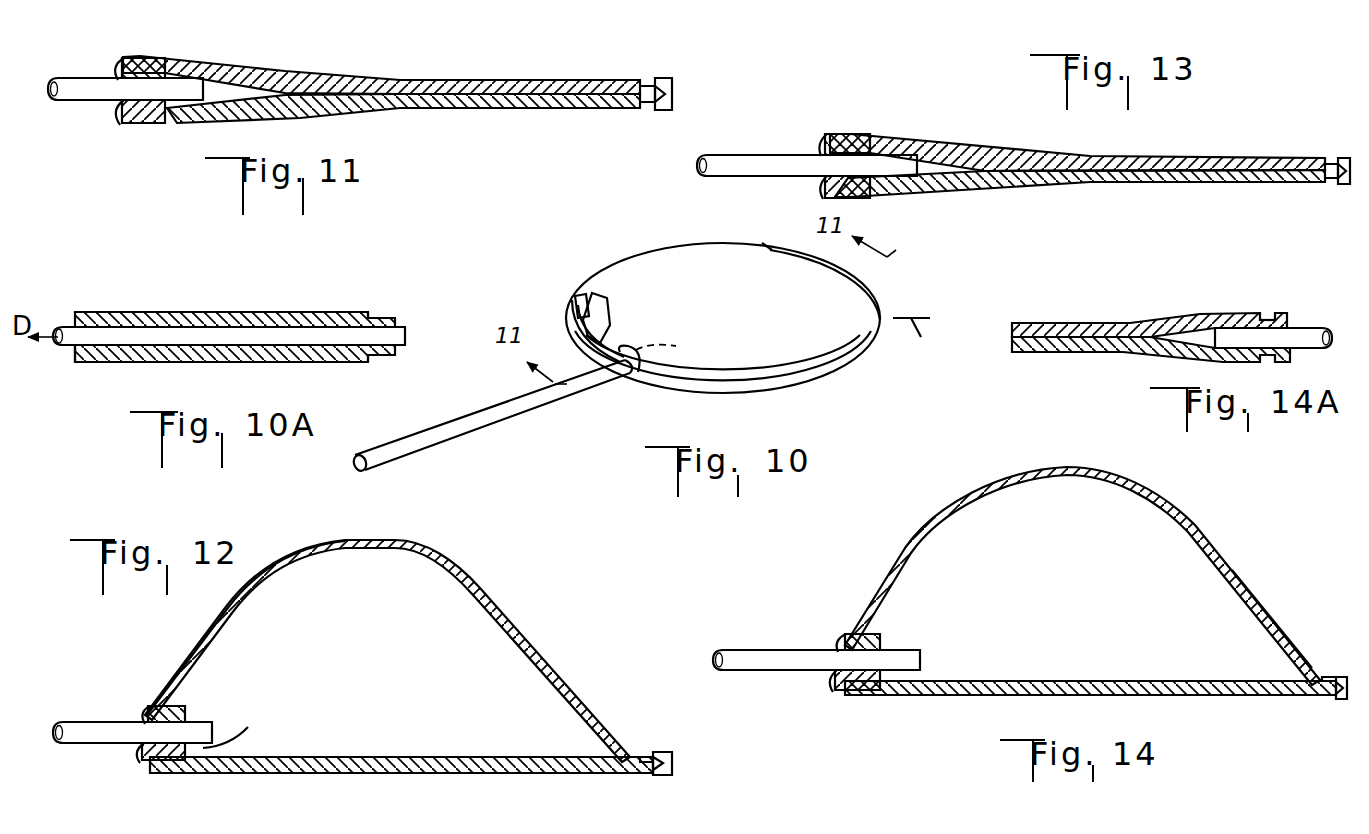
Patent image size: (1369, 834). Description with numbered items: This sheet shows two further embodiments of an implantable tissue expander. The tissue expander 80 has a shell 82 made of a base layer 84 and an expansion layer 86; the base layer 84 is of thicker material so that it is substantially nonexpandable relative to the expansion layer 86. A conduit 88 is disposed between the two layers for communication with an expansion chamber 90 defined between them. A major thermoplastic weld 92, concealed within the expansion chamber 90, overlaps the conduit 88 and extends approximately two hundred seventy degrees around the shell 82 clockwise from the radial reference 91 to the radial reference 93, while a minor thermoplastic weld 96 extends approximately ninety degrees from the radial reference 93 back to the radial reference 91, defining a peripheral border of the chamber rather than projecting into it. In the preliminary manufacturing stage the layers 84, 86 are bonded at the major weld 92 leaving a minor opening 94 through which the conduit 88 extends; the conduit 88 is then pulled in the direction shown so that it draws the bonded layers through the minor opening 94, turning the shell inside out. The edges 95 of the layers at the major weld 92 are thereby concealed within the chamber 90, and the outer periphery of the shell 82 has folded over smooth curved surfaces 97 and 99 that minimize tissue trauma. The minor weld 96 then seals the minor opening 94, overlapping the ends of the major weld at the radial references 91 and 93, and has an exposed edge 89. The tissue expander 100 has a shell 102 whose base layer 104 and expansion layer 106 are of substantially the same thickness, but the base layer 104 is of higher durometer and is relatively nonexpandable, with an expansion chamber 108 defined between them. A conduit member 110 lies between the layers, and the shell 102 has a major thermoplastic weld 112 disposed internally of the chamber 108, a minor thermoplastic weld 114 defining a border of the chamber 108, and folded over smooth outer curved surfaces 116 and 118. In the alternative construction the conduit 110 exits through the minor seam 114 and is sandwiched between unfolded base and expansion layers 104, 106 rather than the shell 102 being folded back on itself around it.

In FIG. 11, the tissue expander 80 is at (411, 85).
In FIG. 10, the tissue expander 80 is at (726, 313).
In FIG. 12, the tissue expander 80 is at (406, 663).
In FIG. 11, the shell 82 is at (381, 93).
In FIG. 10, the shell 82 is at (645, 252).
In FIG. 12, the shell 82 is at (522, 632).
In FIG. 11, the base layer 84 is at (400, 108).
In FIG. 10A, the base layer 84 is at (205, 362).
In FIG. 10, the base layer 84 is at (778, 386).
In FIG. 12, the base layer 84 is at (405, 775).
In FIG. 11, the expansion layer 86 is at (326, 76).
In FIG. 10A, the expansion layer 86 is at (173, 312).
In FIG. 10, the expansion layer 86 is at (745, 378).
In FIG. 12, the expansion layer 86 is at (396, 542).
In FIG. 11, the conduit 88 is at (66, 102).
In FIG. 10A, the conduit 88 is at (63, 326).
In FIG. 10, the conduit 88 is at (535, 410).
In FIG. 12, the conduit 88 is at (85, 722).
In FIG. 11, the exposed edge 89 is at (673, 86).
In FIG. 10, the exposed edge 89 is at (886, 304).
In FIG. 12, the exposed edge 89 is at (674, 760).
In FIG. 11, the expansion chamber 90 is at (222, 86).
In FIG. 10, the expansion chamber 90 is at (606, 306).
In FIG. 12, the expansion chamber 90 is at (343, 658).
In FIG. 10, the radial reference 91 is at (913, 338).
In FIG. 11, the major thermoplastic weld 92 is at (142, 66).
In FIG. 10A, the major thermoplastic weld 92 is at (369, 316).
In FIG. 10, the major thermoplastic weld 92 is at (570, 306).
In FIG. 12, the major thermoplastic weld 92 is at (176, 712).
In FIG. 10, the radial reference 93 is at (778, 242).
In FIG. 10A, the minor opening 94 is at (75, 362).
In FIG. 10, the edges 95 is at (576, 322).
In FIG. 12, the edges 95 is at (253, 712).
In FIG. 11, the minor thermoplastic weld 96 is at (648, 84).
In FIG. 10, the minor thermoplastic weld 96 is at (876, 286).
In FIG. 12, the minor thermoplastic weld 96 is at (648, 754).
In FIG. 11, the folded over smooth curved surface 97 is at (120, 62).
In FIG. 10, the folded over smooth curved surface 97 is at (822, 370).
In FIG. 12, the folded over smooth curved surface 97 is at (142, 714).
In FIG. 11, the folded over smooth curved surface 99 is at (118, 118).
In FIG. 10, the folded over smooth curved surface 99 is at (850, 364).
In FIG. 12, the folded over smooth curved surface 99 is at (132, 756).
In FIG. 13, the tissue expander 100 is at (1049, 156).
In FIG. 14, the tissue expander 100 is at (1068, 590).
In FIG. 13, the shell 102 is at (1077, 165).
In FIG. 14, the shell 102 is at (1222, 532).
In FIG. 14A, the shell 102 is at (1149, 334).
In FIG. 13, the base layer 104 is at (1160, 183).
In FIG. 14, the base layer 104 is at (1220, 696).
In FIG. 14A, the base layer 104 is at (1068, 352).
In FIG. 13, the expansion layer 106 is at (1065, 158).
In FIG. 14, the expansion layer 106 is at (1266, 606).
In FIG. 14A, the expansion layer 106 is at (1095, 323).
In FIG. 13, the expansion chamber 108 is at (940, 166).
In FIG. 14, the expansion chamber 108 is at (1060, 583).
In FIG. 14A, the expansion chamber 108 is at (1190, 332).
In FIG. 13, the conduit member 110 is at (755, 155).
In FIG. 14, the conduit member 110 is at (765, 650).
In FIG. 14A, the conduit member 110 is at (1310, 330).
In FIG. 13, the major thermoplastic weld 112 is at (855, 142).
In FIG. 14, the major thermoplastic weld 112 is at (872, 640).
In FIG. 13, the minor thermoplastic weld 114 is at (1331, 166).
In FIG. 14, the minor thermoplastic weld 114 is at (1330, 677).
In FIG. 14A, the minor thermoplastic weld 114 is at (1266, 316).
In FIG. 13, the folded over smooth outer curved surface 116 is at (826, 140).
In FIG. 14, the folded over smooth outer curved surface 116 is at (840, 640).
In FIG. 13, the folded over smooth outer curved surface 118 is at (825, 182).
In FIG. 14, the folded over smooth outer curved surface 118 is at (834, 688).